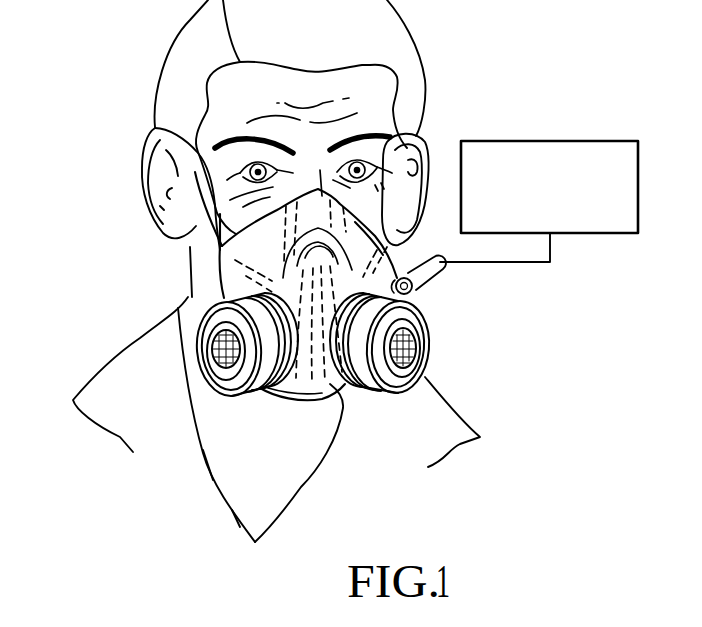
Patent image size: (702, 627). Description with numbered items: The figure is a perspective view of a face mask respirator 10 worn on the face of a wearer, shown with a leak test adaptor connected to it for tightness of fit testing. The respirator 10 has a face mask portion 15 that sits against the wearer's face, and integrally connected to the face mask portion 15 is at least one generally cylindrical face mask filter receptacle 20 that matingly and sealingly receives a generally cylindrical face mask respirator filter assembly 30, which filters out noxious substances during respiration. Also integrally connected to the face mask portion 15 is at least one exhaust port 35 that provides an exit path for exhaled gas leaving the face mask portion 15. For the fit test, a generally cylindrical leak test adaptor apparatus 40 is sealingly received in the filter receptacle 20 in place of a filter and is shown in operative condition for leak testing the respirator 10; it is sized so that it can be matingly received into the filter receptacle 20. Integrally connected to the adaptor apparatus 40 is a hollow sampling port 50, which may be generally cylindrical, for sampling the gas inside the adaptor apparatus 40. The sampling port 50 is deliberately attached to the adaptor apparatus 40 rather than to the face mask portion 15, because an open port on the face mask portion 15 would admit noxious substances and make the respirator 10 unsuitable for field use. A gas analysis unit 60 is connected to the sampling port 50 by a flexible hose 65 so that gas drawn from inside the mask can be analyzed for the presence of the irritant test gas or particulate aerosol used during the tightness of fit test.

The face mask respirator 10 is at (176, 296).
The face mask portion 15 is at (399, 258).
The face mask filter receptacle 20 is at (340, 381).
The face mask respirator filter assembly 30 is at (412, 378).
The exhaust port 35 is at (238, 383).
The leak test adaptor apparatus 40 is at (439, 338).
The sampling port 50 is at (427, 294).
The gas analysis unit 60 is at (607, 235).
The flexible hose 65 is at (443, 270).